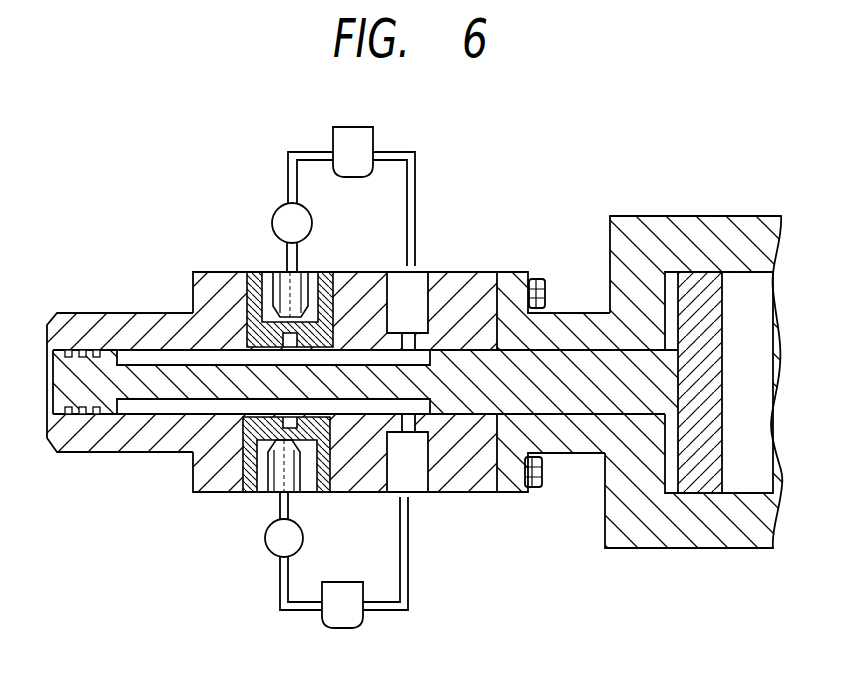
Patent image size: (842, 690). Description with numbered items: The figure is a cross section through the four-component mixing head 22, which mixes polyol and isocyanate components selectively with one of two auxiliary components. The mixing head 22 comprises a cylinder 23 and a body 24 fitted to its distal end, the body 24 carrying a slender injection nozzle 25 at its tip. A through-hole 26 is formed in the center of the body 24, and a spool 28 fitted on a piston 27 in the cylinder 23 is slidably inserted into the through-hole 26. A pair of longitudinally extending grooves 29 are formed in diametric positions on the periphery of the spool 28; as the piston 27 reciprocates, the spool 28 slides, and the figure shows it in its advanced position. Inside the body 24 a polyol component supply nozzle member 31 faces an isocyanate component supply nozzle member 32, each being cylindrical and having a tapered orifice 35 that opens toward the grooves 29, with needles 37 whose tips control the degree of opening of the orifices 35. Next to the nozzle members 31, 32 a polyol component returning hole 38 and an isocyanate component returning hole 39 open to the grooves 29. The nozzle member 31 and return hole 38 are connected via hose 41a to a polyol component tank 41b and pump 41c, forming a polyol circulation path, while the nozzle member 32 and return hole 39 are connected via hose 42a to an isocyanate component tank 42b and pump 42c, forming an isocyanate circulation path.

The four-component mixing head 22 is at (194, 256).
The cylinder 23 is at (733, 225).
The body 24 is at (482, 282).
The injection nozzle 25 is at (85, 325).
The through-hole 26 is at (127, 415).
The piston 27 is at (698, 477).
The spool 28 is at (58, 395).
The elongated grooves 29 is at (172, 400).
The polyol component supply nozzle member 31 is at (257, 277).
The isocyanate component supply nozzle member 32 is at (250, 491).
The tapered orifice 35 is at (285, 352).
The needles 37 is at (298, 273).
The polyol component returning hole 38 is at (427, 272).
The isocyanate component returning hole 39 is at (417, 492).
The hose 41a is at (288, 162).
The polyol component tank 41b is at (370, 138).
The pump 41c is at (310, 210).
The hose 42a is at (278, 592).
The isocyanate component tank 42b is at (355, 620).
The pump 42c is at (305, 536).